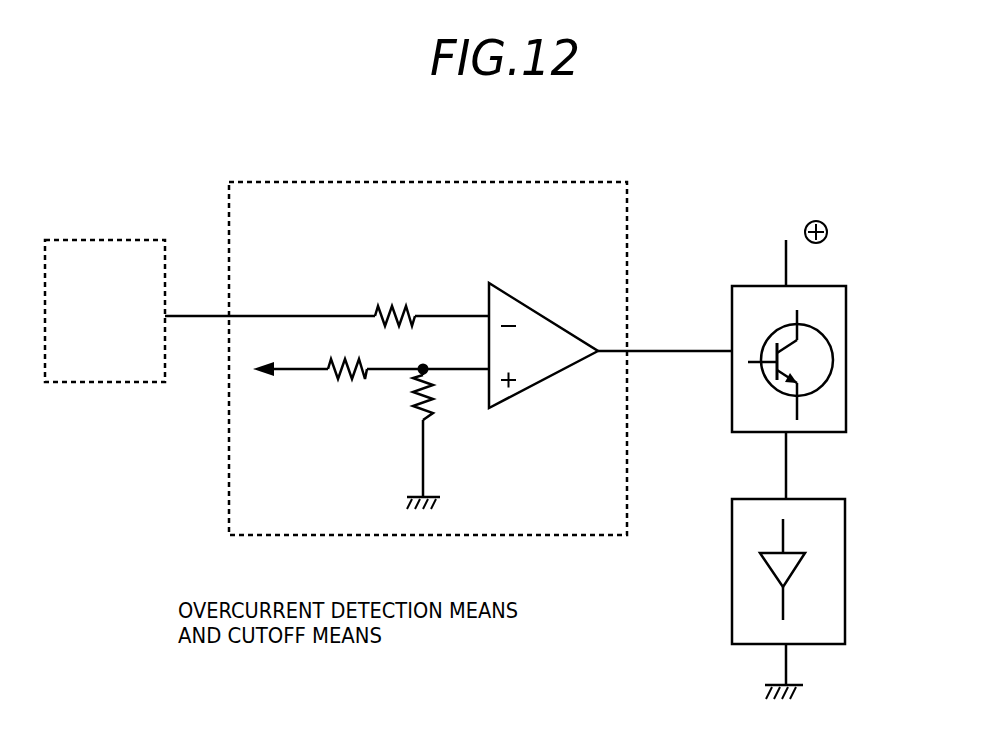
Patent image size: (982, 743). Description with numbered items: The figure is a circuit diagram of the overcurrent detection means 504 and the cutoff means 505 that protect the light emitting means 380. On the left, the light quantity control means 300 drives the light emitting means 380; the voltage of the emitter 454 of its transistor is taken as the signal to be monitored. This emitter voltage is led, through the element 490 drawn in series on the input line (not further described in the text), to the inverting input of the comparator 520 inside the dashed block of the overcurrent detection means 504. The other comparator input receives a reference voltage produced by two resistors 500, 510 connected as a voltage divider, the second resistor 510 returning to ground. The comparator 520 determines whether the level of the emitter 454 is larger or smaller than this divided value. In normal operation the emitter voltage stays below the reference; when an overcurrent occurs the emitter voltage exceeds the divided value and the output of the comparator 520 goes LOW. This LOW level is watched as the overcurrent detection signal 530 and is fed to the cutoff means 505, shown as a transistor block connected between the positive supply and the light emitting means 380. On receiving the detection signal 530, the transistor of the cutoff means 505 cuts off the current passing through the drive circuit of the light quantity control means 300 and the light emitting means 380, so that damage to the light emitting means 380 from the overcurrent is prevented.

The light quantity control means 300 is at (122, 240).
The emitter 454 is at (190, 315).
The overcurrent detection means 504 is at (475, 181).
The resistor R10 490 is at (397, 306).
The resistor R11 500 is at (336, 380).
The resistor R12 510 is at (433, 396).
The comparator 520 is at (560, 340).
The overcurrent detection signal 530 is at (670, 350).
The cutoff means 505 is at (846, 330).
The light emitting means 380 is at (732, 536).